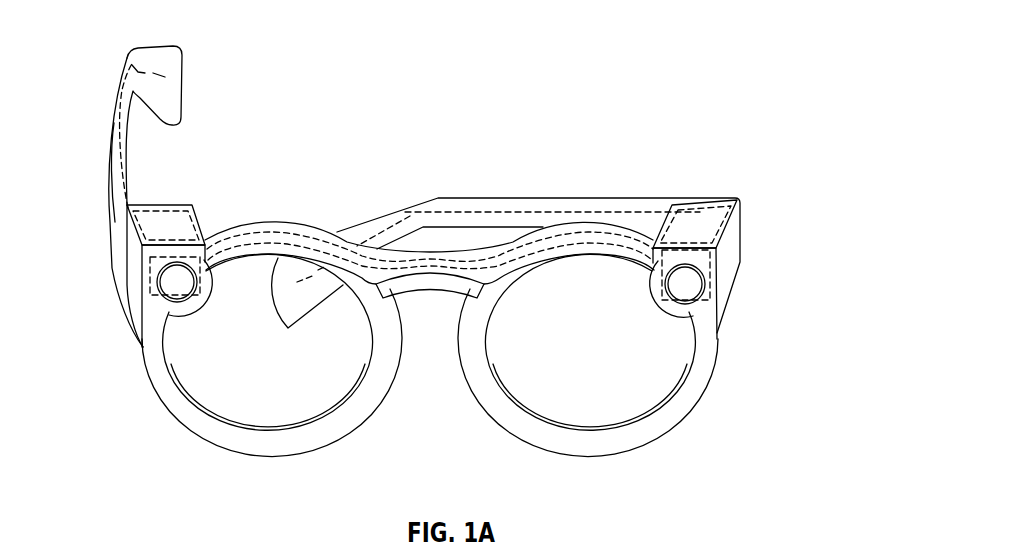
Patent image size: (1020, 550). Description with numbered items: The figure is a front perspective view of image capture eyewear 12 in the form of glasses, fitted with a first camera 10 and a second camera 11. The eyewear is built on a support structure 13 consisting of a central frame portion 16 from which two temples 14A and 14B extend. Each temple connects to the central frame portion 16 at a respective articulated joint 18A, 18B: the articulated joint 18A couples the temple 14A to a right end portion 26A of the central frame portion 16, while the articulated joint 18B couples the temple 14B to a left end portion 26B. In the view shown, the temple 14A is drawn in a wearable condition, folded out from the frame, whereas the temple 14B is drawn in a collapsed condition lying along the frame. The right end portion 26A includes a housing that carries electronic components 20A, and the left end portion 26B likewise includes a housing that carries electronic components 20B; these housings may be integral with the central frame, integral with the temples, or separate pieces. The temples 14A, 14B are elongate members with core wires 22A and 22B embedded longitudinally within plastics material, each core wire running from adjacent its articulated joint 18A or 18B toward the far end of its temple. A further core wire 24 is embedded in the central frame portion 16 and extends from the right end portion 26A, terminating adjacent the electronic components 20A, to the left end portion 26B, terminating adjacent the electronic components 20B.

The first camera 10 is at (170, 284).
The second camera 11 is at (683, 288).
The image capture eyewear 12 is at (533, 455).
The support structure 13 is at (418, 236).
The temple 14A is at (195, 76).
The temple 14B is at (595, 193).
The central frame portion 16 is at (688, 418).
The articulated joint 18A is at (201, 212).
The articulated joint 18B is at (755, 202).
The electronic components 20A is at (126, 258).
The electronic components 20B is at (742, 257).
The core wire 22A is at (132, 50).
The core wire 22B is at (521, 212).
The core wire 24 is at (414, 259).
The right end portion 26A is at (183, 188).
The left end portion 26B is at (755, 176).